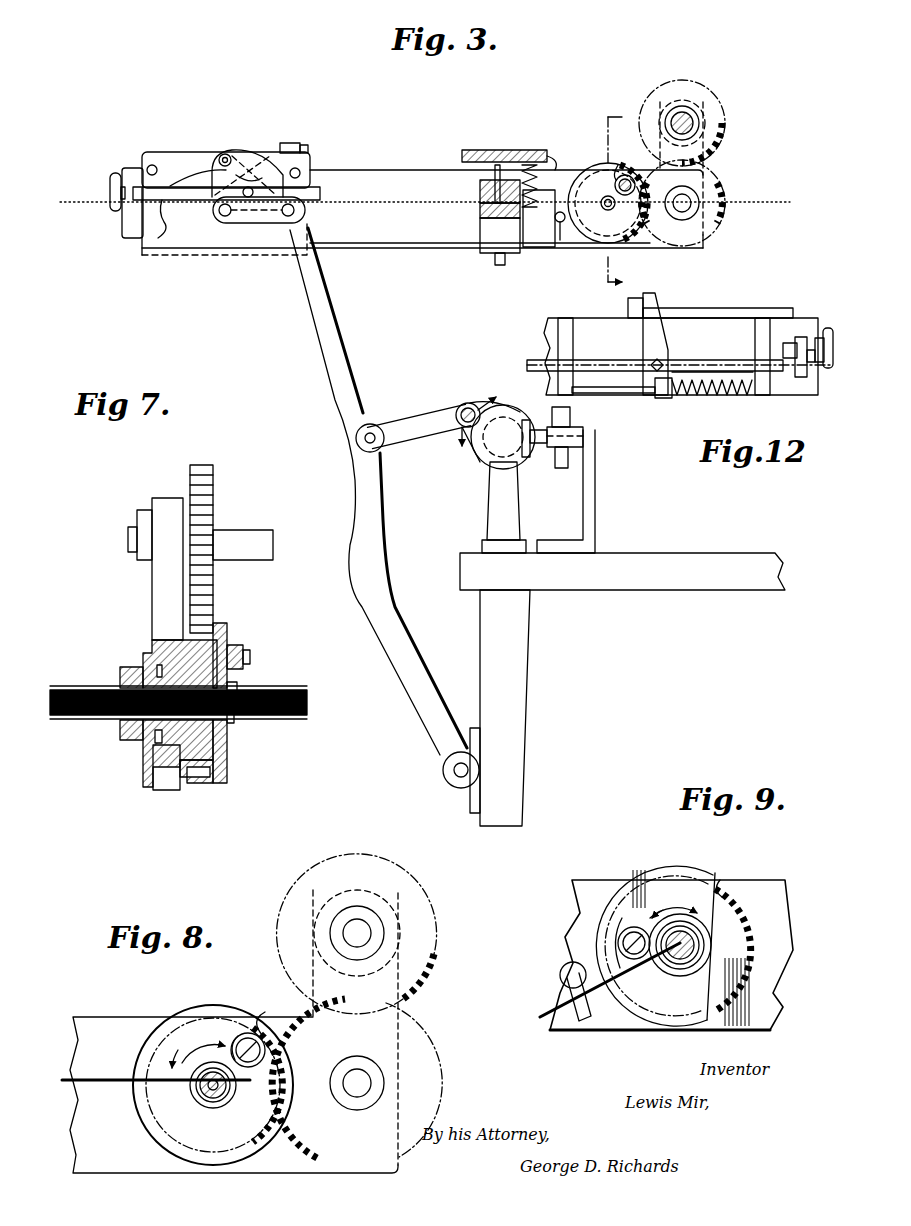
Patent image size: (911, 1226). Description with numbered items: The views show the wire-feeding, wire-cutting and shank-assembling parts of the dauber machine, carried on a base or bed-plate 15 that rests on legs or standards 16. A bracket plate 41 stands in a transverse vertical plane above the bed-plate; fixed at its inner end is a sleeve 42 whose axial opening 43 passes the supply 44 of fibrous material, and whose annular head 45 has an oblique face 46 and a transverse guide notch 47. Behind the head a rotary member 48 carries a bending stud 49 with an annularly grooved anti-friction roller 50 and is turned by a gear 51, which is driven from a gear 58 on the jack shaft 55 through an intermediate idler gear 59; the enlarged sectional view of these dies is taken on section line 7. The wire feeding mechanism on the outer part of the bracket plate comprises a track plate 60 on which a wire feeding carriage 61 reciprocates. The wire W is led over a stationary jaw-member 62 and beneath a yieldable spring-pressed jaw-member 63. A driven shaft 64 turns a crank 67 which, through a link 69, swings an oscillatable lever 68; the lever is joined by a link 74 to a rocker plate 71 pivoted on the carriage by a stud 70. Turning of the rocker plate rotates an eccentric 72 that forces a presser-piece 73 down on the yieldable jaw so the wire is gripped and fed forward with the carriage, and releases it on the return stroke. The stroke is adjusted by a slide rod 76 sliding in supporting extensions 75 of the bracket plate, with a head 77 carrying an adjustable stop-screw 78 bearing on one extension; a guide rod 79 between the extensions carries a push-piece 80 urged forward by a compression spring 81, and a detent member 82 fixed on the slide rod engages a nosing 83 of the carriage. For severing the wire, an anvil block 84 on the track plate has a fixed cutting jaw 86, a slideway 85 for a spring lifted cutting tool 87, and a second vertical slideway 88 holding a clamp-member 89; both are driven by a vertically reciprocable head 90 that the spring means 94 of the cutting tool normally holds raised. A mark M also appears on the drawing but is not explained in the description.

In FIG. 3, the section line 7— 7 is at (606, 203).
In FIG. 3, the base or bed-plate 15 is at (465, 562).
In FIG. 3, the legs or standards 16 is at (483, 627).
In FIG. 3, the bracket plate 41 is at (367, 173).
In FIG. 12, the bracket plate 41 is at (550, 323).
In FIG. 7, the bracket plate 41 is at (152, 590).
In FIG. 8, the bracket plate 41 is at (132, 1017).
In FIG. 9, the bracket plate 41 is at (762, 895).
In FIG. 7, the sleeve 42 is at (150, 752).
In FIG. 7, the axial opening 43 is at (118, 737).
In FIG. 8, the axial opening 43 is at (208, 1107).
In FIG. 9, the axial opening 43 is at (672, 962).
In FIG. 3, the supply of fibrous material 44 is at (614, 238).
In FIG. 7, the supply of fibrous material 44 is at (283, 718).
In FIG. 8, the supply of fibrous material 44 is at (252, 1100).
In FIG. 9, the supply of fibrous material 44 is at (742, 968).
In FIG. 7, the annular head 45 is at (233, 732).
In FIG. 8, the annular head 45 is at (215, 1057).
In FIG. 7, the oblique face 46 is at (238, 684).
In FIG. 8, the oblique face 46 is at (228, 1085).
In FIG. 9, the oblique face 46 is at (705, 918).
In FIG. 7, the transverse guide notch 47 is at (240, 722).
In FIG. 8, the transverse guide notch 47 is at (200, 1097).
In FIG. 3, the rotary member 48 is at (593, 228).
In FIG. 7, the rotary member 48 is at (228, 630).
In FIG. 8, the rotary member 48 is at (212, 1005).
In FIG. 9, the rotary member 48 is at (675, 868).
In FIG. 3, the bending stud 49 is at (630, 177).
In FIG. 7, the bending stud 49 is at (251, 657).
In FIG. 8, the bending stud 49 is at (252, 1033).
In FIG. 9, the bending stud 49 is at (618, 943).
In FIG. 3, the anti-friction roller 50 is at (619, 166).
In FIG. 7, the anti-friction roller 50 is at (240, 646).
In FIG. 8, the anti-friction roller 50 is at (240, 1032).
In FIG. 9, the anti-friction roller 50 is at (620, 925).
In FIG. 7, the gear 51 is at (207, 778).
In FIG. 8, the gear 51 is at (284, 1030).
In FIG. 9, the gear 51 is at (740, 895).
In FIG. 3, the jack shaft 55 is at (690, 122).
In FIG. 7, the jack shaft 55 is at (256, 530).
In FIG. 8, the jack shaft 55 is at (360, 933).
In FIG. 3, the gear 58 is at (718, 154).
In FIG. 7, the gear 58 is at (208, 505).
In FIG. 8, the gear 58 is at (432, 970).
In FIG. 3, the intermediate idler gear 59 is at (722, 184).
In FIG. 8, the intermediate idler gear 59 is at (420, 1025).
In FIG. 3, the track plate 60 is at (376, 234).
In FIG. 3, the wire feeding carriage 61 is at (230, 256).
In FIG. 12, the wire feeding carriage 61 is at (714, 310).
In FIG. 3, the stationary jaw-member 62 is at (176, 215).
In FIG. 3, the yieldable spring-pressed jaw-member 63 is at (152, 252).
In FIG. 3, the driven shaft 64 is at (495, 452).
In FIG. 3, the crank 67 is at (486, 412).
In FIG. 3, the oscillatable lever 68 is at (356, 370).
In FIG. 3, the link 69 is at (414, 418).
In FIG. 3, the stud 70 is at (222, 158).
In FIG. 3, the rocker plate 71 is at (262, 165).
In FIG. 3, the eccentric 72 is at (227, 153).
In FIG. 3, the presser-piece 73 is at (195, 168).
In FIG. 3, the link 74 is at (262, 224).
In FIG. 12, the supporting extensions 75 is at (566, 343).
In FIG. 12, the adjustable slide rod 76 is at (693, 360).
In FIG. 12, the head 77 is at (800, 337).
In FIG. 3, the adjustable stop-screw 78 is at (112, 210).
In FIG. 12, the adjustable stop-screw 78 is at (826, 370).
In FIG. 12, the guide rod 79 is at (612, 395).
In FIG. 12, the push-piece 80 is at (664, 399).
In FIG. 12, the compression spring 81 is at (718, 378).
In FIG. 3, the detent member 82 is at (290, 143).
In FIG. 12, the detent member 82 is at (644, 341).
In FIG. 3, the nosing 83 is at (306, 147).
In FIG. 12, the nosing 83 is at (628, 305).
In FIG. 3, the anvil block 84 is at (493, 240).
In FIG. 3, the slideway 85 is at (540, 180).
In FIG. 3, the fixed cutting jaw 86 is at (532, 248).
In FIG. 3, the cutting tool 87 is at (566, 204).
In FIG. 3, the second vertical slideway 88 is at (480, 185).
In FIG. 3, the clamp-member 89 is at (494, 168).
In FIG. 3, the vertically reciprocable head 90 is at (483, 150).
In FIG. 3, the spring means 94 is at (548, 156).
In FIG. 3, the motor shaft line M is at (398, 210).
In FIG. 8, the wire W is at (102, 1082).
In FIG. 9, the wire W is at (610, 982).